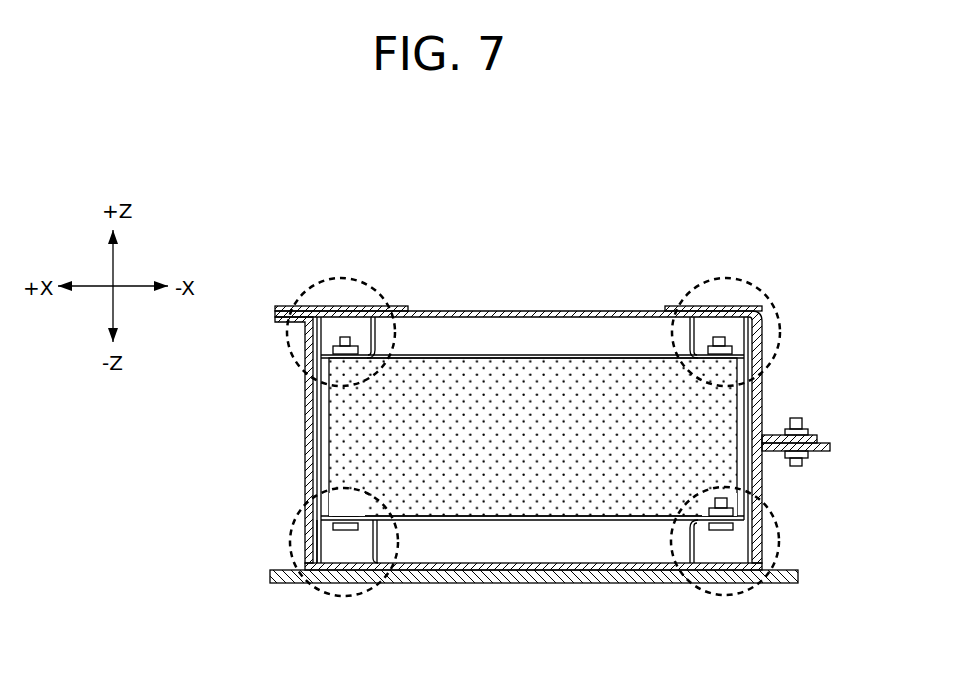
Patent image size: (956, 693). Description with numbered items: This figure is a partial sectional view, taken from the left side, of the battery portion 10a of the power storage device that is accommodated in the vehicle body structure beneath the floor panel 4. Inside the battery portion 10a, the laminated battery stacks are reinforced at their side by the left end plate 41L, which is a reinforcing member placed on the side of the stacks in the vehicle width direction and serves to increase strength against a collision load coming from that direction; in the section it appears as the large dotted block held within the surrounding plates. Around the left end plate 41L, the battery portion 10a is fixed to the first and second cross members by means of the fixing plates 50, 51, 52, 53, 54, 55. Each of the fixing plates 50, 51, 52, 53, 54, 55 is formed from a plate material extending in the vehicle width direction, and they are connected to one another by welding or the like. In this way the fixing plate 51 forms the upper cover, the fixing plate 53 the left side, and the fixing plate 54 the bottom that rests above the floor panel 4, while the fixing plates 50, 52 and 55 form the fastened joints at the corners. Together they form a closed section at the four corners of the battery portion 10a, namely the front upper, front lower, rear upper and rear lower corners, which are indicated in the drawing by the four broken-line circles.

The floor panel 4 is at (558, 584).
The battery portion 10a is at (736, 418).
The left end plate 41L is at (478, 388).
The fixing plate 50 is at (743, 303).
The fixing plate 51 is at (608, 309).
The fixing plate 52 is at (347, 307).
The fixing plate 53 is at (306, 448).
The fixing plate 54 is at (475, 568).
The fixing plate 55 is at (757, 538).